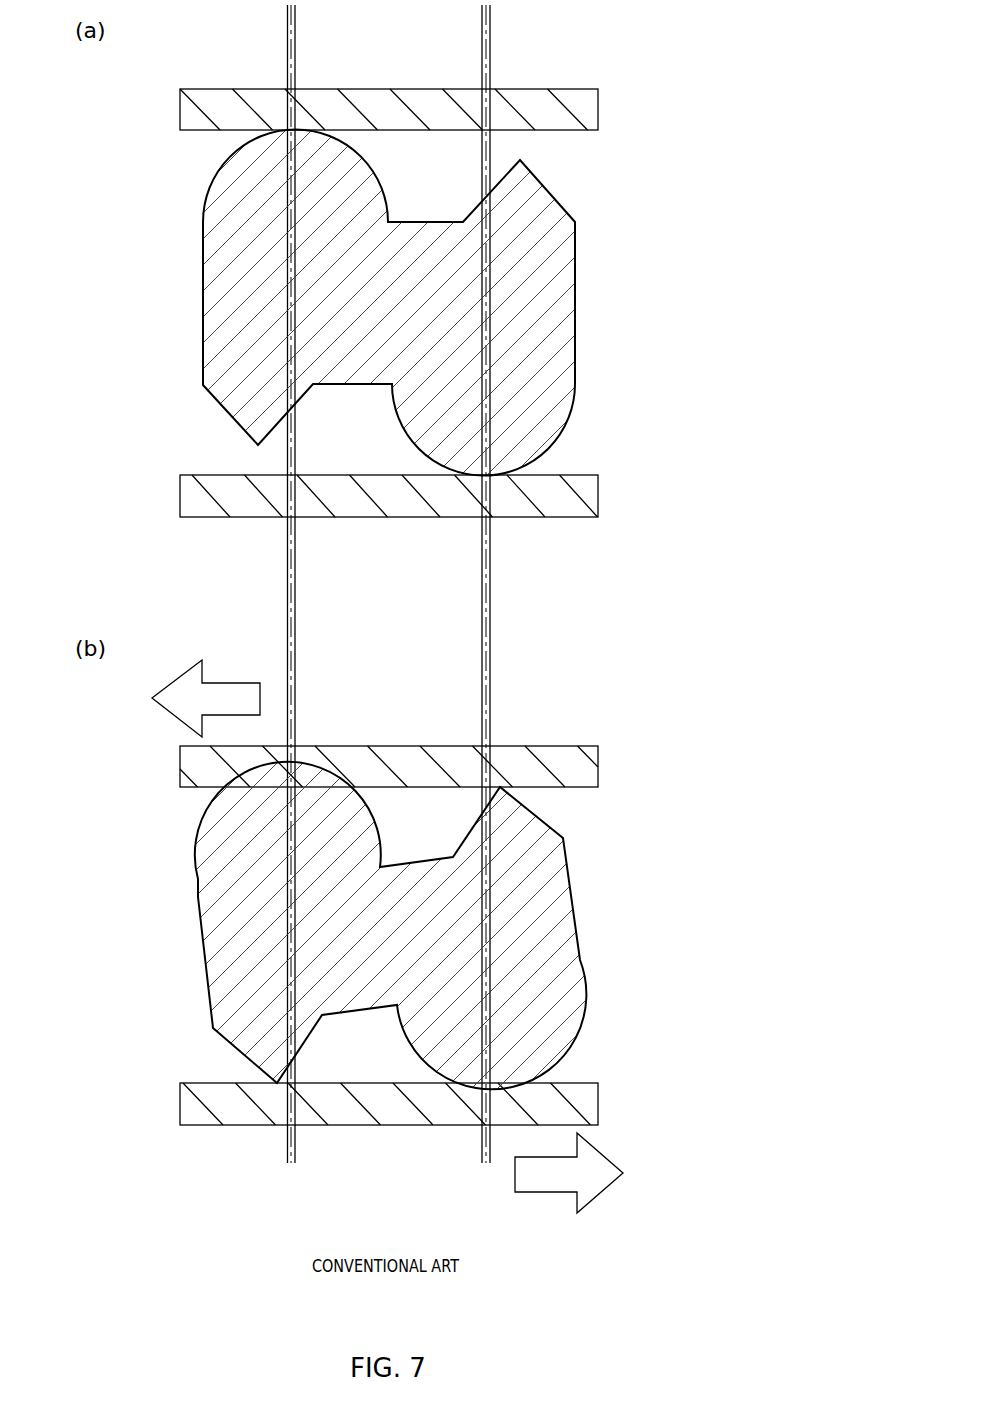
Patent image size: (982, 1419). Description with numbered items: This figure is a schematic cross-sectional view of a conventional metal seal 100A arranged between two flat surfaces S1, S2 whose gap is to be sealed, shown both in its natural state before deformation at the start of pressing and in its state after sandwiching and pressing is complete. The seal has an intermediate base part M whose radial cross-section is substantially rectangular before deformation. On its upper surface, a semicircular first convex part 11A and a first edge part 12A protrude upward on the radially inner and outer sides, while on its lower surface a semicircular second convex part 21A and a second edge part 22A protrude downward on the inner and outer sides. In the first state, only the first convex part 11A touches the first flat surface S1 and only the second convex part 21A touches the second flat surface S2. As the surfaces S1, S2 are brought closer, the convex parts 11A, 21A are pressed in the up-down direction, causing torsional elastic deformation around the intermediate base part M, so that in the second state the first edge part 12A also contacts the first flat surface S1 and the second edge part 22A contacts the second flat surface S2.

The first convex part 11A is at (294, 396).
The first edge part 12A is at (495, 416).
The second convex part 21A is at (491, 829).
The second edge part 22A is at (285, 826).
The first flat surface S1 is at (399, 476).
The second flat surface S2 is at (384, 764).
The intermediate base part M is at (338, 610).
The metal seal 100A is at (474, 610).